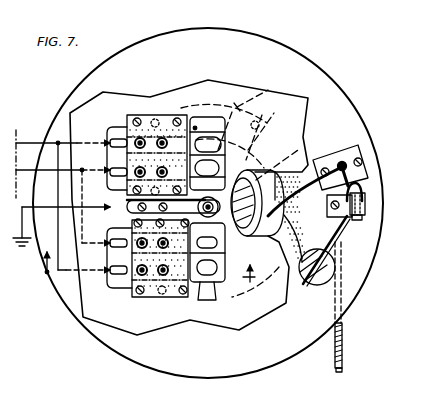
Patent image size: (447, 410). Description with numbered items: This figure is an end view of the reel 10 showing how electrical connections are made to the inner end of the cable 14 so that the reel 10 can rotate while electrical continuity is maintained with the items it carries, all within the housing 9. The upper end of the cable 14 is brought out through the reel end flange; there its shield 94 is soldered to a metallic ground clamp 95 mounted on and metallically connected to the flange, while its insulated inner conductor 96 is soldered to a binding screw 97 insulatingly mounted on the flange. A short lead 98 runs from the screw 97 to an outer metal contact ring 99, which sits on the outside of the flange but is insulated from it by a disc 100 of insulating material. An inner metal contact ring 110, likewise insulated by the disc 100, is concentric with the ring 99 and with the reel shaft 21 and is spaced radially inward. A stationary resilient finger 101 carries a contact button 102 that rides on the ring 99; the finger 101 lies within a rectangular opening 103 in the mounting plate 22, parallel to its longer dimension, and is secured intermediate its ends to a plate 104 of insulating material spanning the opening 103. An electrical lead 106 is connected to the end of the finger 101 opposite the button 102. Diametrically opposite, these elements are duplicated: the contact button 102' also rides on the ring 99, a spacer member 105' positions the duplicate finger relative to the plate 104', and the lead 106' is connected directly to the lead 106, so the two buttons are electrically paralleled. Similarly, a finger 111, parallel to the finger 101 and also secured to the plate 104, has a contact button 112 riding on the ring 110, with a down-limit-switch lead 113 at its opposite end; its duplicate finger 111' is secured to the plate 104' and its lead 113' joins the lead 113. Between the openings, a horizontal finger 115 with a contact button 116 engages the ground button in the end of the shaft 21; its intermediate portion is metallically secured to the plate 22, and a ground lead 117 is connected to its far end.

The reel 10 is at (299, 68).
The mounting plate 22 is at (118, 318).
The cable 14 is at (332, 245).
The housing 9 is at (144, 272).
The reel shaft 21 is at (246, 130).
The shield 94 is at (368, 192).
The ground clamp 95 is at (368, 212).
The inner conductor 96 is at (370, 164).
The binding screw 97 is at (344, 156).
The short lead 98 is at (310, 190).
The outer metal contact ring 99 is at (266, 176).
The disc of electrical insulating material 100 is at (293, 220).
The stationary resilient finger 101 is at (208, 140).
The contact button 102 is at (222, 268).
The contact button 102' is at (235, 103).
The rectangular opening 103 is at (198, 118).
The plate of electrical insulating material 104 is at (160, 288).
The plate of electrical insulating material 104' is at (169, 122).
The spacer member 105' is at (146, 132).
The electrical lead 106 is at (79, 209).
The electrical lead 106' is at (104, 174).
The inner metal contact ring 110 is at (266, 138).
The stationary resilient finger 111 is at (244, 203).
The stationary resilient finger 111' is at (158, 109).
The contact button 112 is at (231, 246).
The electrical lead 113 is at (62, 200).
The electrical lead 113' is at (93, 195).
The stationary resilient finger 115 is at (173, 216).
The contact button 116 is at (258, 203).
The electrical lead 117 is at (30, 209).